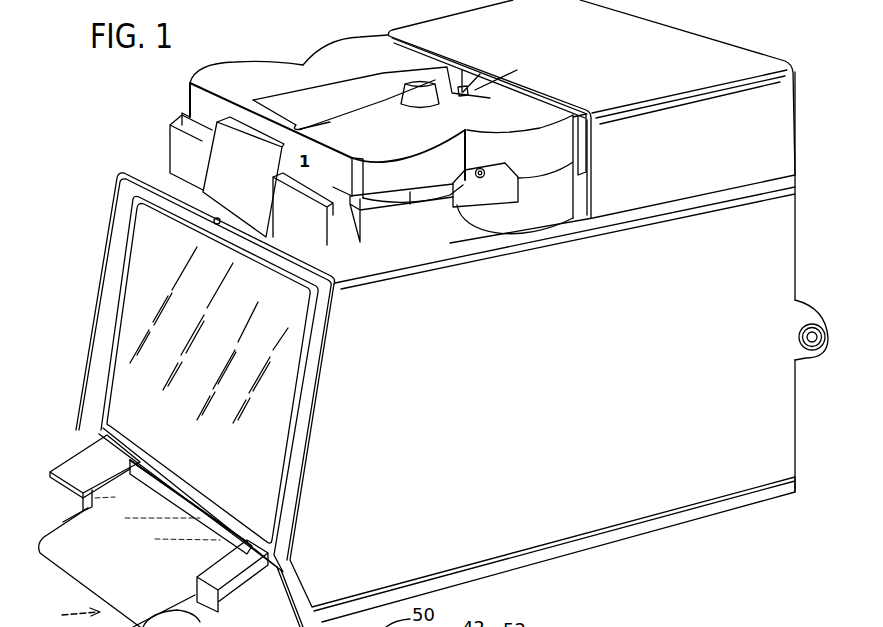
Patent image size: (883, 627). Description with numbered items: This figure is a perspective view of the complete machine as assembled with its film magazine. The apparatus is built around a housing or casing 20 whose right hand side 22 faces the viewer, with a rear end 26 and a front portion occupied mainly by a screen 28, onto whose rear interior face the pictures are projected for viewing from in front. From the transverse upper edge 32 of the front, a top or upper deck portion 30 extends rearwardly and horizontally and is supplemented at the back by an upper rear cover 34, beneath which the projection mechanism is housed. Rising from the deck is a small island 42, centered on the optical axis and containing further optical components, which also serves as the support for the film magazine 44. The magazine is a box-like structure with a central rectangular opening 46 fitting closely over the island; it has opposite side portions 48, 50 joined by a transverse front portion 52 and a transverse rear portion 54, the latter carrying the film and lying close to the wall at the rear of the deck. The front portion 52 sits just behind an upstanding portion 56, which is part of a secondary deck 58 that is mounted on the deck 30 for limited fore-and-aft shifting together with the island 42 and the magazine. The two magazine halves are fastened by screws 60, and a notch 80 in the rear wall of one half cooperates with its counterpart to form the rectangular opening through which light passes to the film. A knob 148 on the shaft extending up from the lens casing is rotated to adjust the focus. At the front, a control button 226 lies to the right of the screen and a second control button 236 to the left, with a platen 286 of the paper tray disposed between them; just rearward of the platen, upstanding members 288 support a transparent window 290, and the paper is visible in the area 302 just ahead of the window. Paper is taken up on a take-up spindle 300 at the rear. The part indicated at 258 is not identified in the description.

The housing or casing 20 is at (555, 577).
The right hand side 22 is at (436, 471).
The rear end 26 is at (797, 214).
The screen 28 is at (152, 425).
The top or upper deck portion 30 is at (404, 264).
The transverse upper edge 32 is at (148, 170).
The upper rear cover 34 is at (708, 50).
The island 42 is at (309, 120).
The film magazine 44 is at (257, 53).
The central rectangular opening 46 is at (360, 112).
The side portion of magazine 48 is at (343, 51).
The side portion of magazine 50 is at (540, 129).
The transverse front portion 52 is at (300, 129).
The transverse rear portion 54 is at (466, 82).
The upstanding portion 56 is at (178, 136).
The secondary deck 58 is at (479, 233).
The screws 60 is at (466, 169).
The notch or opening 80 is at (531, 74).
The knob 148 is at (418, 80).
The control button 226 is at (250, 597).
The second control button 236 is at (78, 457).
The feed direction 258 is at (64, 615).
The platen 286 is at (63, 522).
The upstanding members 288 is at (76, 502).
The window 290 is at (182, 563).
The take-up spindle 300 is at (810, 352).
The area ahead of window 302 is at (127, 570).